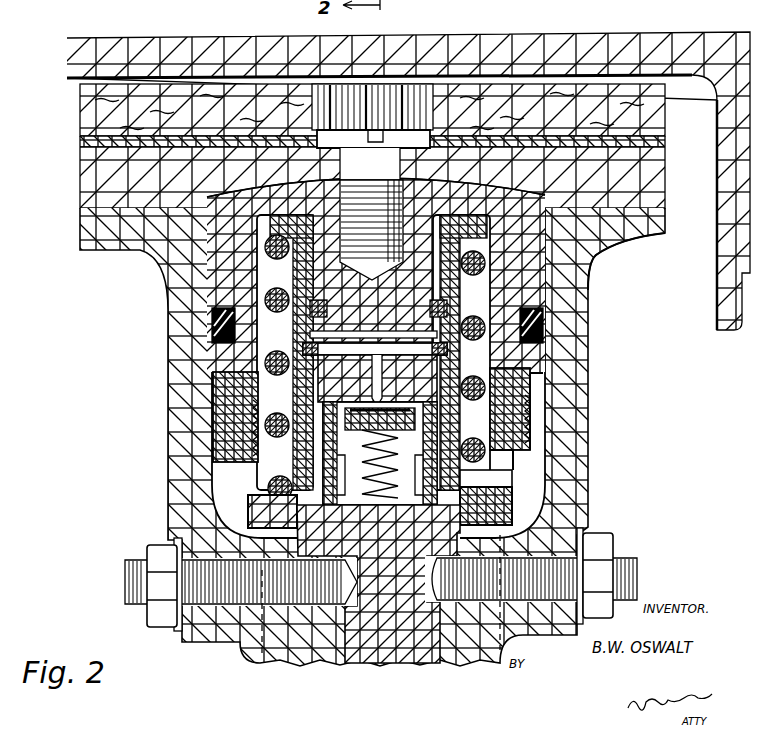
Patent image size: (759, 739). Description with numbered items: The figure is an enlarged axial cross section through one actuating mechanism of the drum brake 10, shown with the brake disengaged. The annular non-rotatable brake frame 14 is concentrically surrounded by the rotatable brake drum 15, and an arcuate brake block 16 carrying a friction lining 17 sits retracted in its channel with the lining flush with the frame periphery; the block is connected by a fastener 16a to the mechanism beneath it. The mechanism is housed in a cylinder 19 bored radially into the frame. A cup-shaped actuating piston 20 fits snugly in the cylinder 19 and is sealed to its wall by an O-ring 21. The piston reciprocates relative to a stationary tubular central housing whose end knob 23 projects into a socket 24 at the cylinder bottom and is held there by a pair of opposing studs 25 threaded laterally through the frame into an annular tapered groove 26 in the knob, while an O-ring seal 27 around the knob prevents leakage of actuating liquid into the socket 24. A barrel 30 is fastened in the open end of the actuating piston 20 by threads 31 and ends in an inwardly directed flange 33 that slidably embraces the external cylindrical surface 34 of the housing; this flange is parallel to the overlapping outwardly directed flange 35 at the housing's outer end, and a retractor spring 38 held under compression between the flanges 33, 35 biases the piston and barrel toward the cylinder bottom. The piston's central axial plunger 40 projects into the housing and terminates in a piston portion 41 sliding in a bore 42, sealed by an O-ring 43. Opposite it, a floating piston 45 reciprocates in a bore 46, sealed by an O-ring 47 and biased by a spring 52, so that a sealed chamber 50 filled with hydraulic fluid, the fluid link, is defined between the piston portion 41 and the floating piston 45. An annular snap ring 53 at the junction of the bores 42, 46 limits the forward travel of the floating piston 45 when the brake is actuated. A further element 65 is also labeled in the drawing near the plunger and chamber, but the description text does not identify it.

The drum brake 10 is at (580, 50).
The brake drum 15 is at (655, 50).
The friction lining 17 is at (650, 92).
The brake block 16 is at (650, 165).
The fastener 16a is at (372, 182).
The cylinder 19 is at (535, 234).
The actuating piston 20 is at (525, 270).
The outwardly directed flange 35 is at (470, 213).
The brake frame 14 is at (570, 372).
The central axial plunger 40 is at (262, 240).
The O-ring 43 is at (300, 274).
The annular snap ring 53 is at (300, 350).
The floating piston 45 is at (331, 394).
The piston portion 41 is at (405, 294).
The O-ring 21 is at (545, 322).
The bore 42 is at (330, 295).
The retractor spring 38 is at (470, 345).
The sealed chamber 50 is at (415, 346).
The valve block 65 is at (385, 390).
The external cylindrical surface 34 is at (479, 420).
The O-ring 47 is at (330, 364).
The bore 46 is at (300, 460).
The threads 31 is at (520, 427).
The barrel 30 is at (514, 465).
The spring 52 is at (480, 484).
The inwardly directed flange 33 is at (515, 522).
The end knob 23 is at (390, 632).
The stud 25 is at (580, 553).
The socket 24 is at (368, 622).
The O-ring seal 27 is at (265, 618).
The annular tapered groove 26 is at (447, 640).